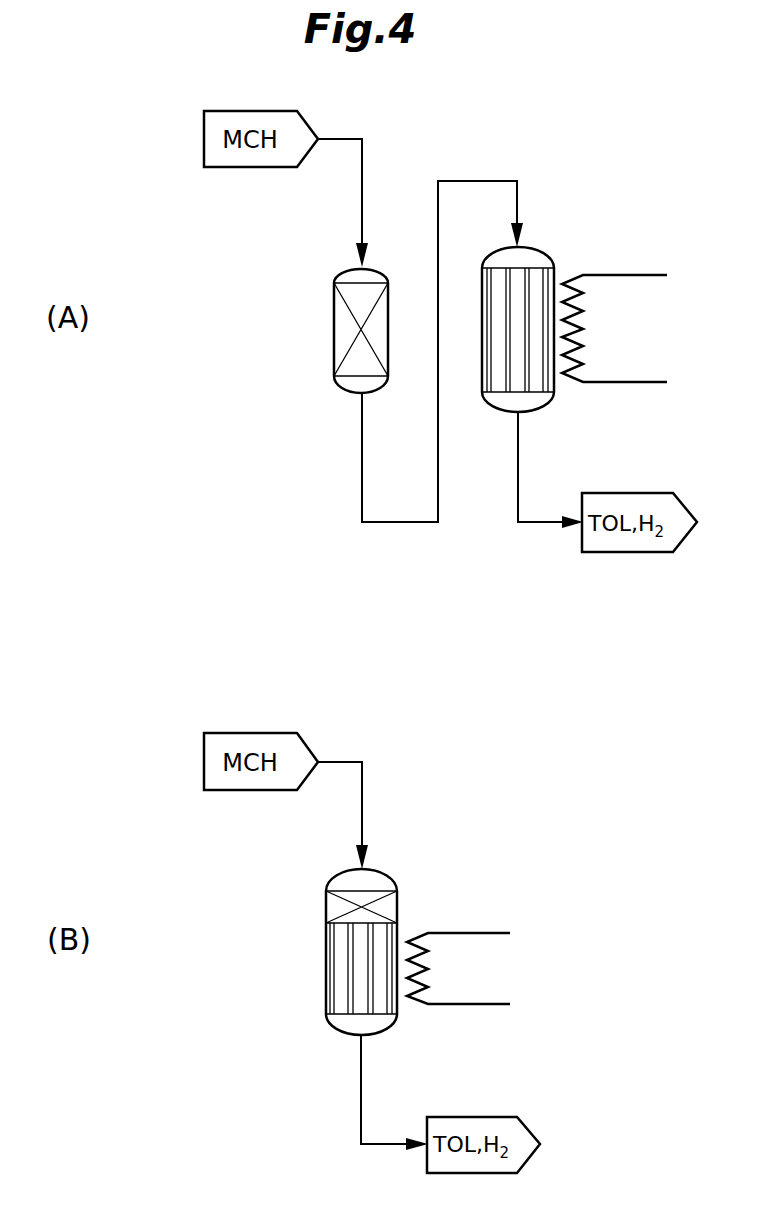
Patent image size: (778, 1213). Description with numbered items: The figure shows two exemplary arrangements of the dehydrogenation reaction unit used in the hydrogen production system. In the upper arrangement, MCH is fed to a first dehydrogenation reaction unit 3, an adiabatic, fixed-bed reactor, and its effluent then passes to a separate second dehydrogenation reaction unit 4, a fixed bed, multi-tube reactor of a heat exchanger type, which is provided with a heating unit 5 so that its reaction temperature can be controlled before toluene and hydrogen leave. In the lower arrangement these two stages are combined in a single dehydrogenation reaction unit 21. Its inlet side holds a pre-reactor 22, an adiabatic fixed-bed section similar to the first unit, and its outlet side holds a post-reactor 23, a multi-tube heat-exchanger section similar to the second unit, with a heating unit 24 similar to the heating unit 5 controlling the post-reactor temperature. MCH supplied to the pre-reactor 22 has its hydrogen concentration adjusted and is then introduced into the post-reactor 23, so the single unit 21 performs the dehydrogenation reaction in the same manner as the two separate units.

The first dehydrogenation reaction unit 3 is at (333, 336).
The second dehydrogenation reaction unit 4 is at (540, 252).
The heating unit 5 is at (627, 275).
The dehydrogenation reaction unit 21 is at (368, 937).
The pre-reactor 22 is at (312, 892).
The post-reactor 23 is at (312, 929).
The heating unit 24 is at (467, 933).